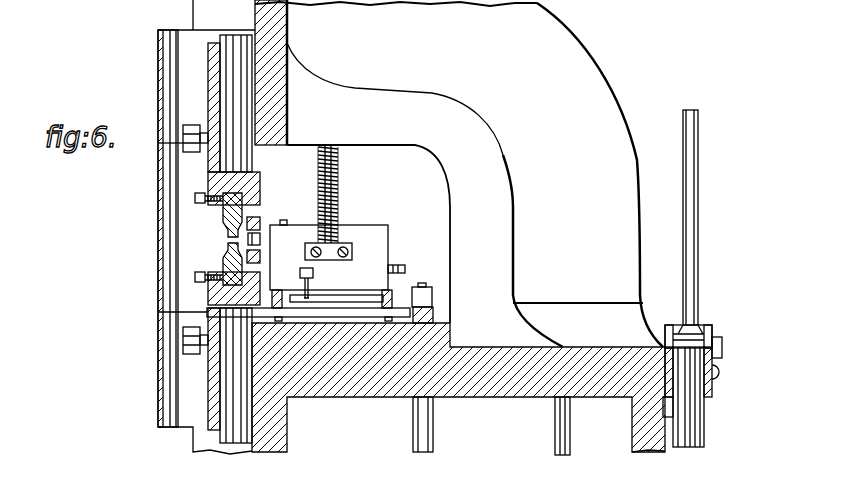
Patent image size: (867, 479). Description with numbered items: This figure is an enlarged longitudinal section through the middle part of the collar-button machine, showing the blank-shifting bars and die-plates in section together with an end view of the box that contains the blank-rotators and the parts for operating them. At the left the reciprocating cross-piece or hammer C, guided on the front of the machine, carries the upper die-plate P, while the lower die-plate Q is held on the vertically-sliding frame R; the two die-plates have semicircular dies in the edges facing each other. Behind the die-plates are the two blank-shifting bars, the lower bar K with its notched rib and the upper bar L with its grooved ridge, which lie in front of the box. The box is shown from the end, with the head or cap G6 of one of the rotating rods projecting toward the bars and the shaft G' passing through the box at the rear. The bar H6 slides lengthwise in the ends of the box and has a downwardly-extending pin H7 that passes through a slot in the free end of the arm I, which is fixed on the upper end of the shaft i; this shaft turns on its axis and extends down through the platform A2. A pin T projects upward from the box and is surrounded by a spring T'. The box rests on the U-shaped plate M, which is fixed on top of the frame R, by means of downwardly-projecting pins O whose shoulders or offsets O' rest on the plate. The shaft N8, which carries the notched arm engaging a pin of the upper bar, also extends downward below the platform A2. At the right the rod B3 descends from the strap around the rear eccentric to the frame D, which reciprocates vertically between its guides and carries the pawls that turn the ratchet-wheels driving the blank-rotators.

The reciprocating cross-piece or hammer C is at (236, 136).
The upper die-plate P is at (224, 212).
The lower die-plate Q is at (226, 278).
The upper bar L is at (262, 216).
The head or cap G6 is at (260, 240).
The lower bar K is at (260, 257).
The pin T is at (344, 194).
The spring T' is at (315, 195).
The arm I is at (352, 296).
The bar H6 is at (313, 272).
The downwardly-extending pin H7 is at (305, 296).
The shaft G' is at (403, 260).
The shoulder or offset O' is at (413, 299).
The downwardly-projecting pin O is at (330, 318).
The U-shaped plate M is at (298, 318).
The platform A2 is at (458, 387).
The vertically-sliding frame R is at (230, 375).
The shaft i is at (434, 413).
The shaft N8 is at (570, 425).
The rod B3 is at (698, 273).
The frame D is at (702, 424).